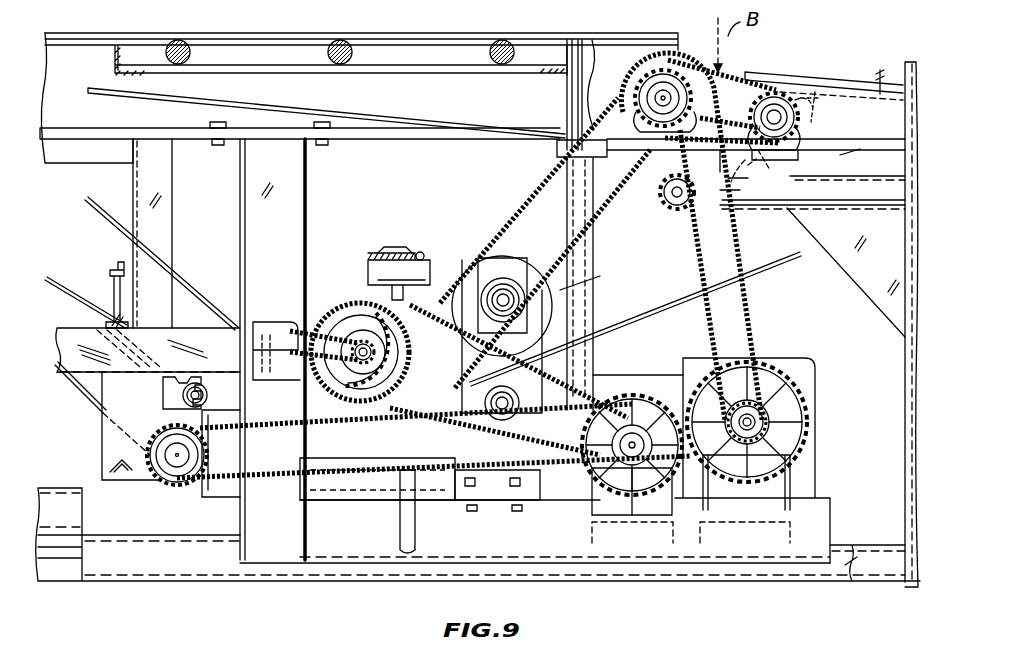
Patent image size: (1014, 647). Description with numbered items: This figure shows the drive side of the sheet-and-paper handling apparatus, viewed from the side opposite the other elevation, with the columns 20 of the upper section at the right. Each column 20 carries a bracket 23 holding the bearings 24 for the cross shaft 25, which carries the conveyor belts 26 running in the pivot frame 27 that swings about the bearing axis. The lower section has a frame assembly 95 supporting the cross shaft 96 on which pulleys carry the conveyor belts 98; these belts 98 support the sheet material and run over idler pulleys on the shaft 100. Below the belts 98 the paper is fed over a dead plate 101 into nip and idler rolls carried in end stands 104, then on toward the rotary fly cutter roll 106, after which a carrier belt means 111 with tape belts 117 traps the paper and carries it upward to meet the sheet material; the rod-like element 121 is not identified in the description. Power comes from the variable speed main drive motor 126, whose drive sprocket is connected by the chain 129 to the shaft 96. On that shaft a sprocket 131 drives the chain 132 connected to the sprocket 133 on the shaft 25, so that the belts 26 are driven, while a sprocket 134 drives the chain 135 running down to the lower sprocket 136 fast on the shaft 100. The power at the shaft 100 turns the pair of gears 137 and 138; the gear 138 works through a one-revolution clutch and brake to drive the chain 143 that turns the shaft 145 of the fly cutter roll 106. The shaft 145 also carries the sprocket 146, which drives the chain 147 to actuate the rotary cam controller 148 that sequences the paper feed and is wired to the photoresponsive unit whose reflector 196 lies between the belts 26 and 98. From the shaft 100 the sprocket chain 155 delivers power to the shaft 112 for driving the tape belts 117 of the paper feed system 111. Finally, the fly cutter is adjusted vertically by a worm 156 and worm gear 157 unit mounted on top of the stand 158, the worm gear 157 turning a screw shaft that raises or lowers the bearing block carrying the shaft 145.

The conveyor belts 98 is at (250, 34).
The frame assembly 95 is at (351, 146).
The sprocket 131 is at (595, 128).
The columns 20 is at (904, 364).
The conveyor belts 26 is at (816, 70).
The pivot frame 27 is at (884, 64).
The chain 132 is at (815, 108).
The sprocket 134 is at (657, 48).
The cross shaft 96 is at (665, 96).
The cross shaft 25 is at (775, 115).
The sprocket 133 is at (733, 84).
The bearings 24 is at (772, 160).
The bracket 23 is at (836, 204).
The reflector 196 is at (685, 212).
The chain 129 is at (525, 202).
The chain 135 is at (758, 320).
The dead plate 101 is at (652, 314).
The rotary fly cutter roll 106 is at (588, 288).
The tape belts 117 is at (72, 316).
The guide rod 121 is at (82, 296).
The rotary cam controller 148 is at (254, 318).
The chain 147 is at (298, 332).
The sprocket 146 is at (312, 336).
The shaft 145 is at (363, 346).
The variable speed main drive motor 126 is at (439, 308).
The worm gear 157 is at (370, 252).
The worm 156 is at (420, 252).
The stand 158 is at (502, 335).
The chain 143 is at (490, 358).
The sprocket chain 155 is at (326, 482).
The shaft 112 is at (179, 464).
The carrier belt means 111 is at (91, 448).
The end stands 104 is at (496, 480).
The gear 138 is at (636, 392).
The gear 137 is at (796, 418).
The lower sprocket 136 is at (770, 402).
The shaft 100 is at (753, 406).